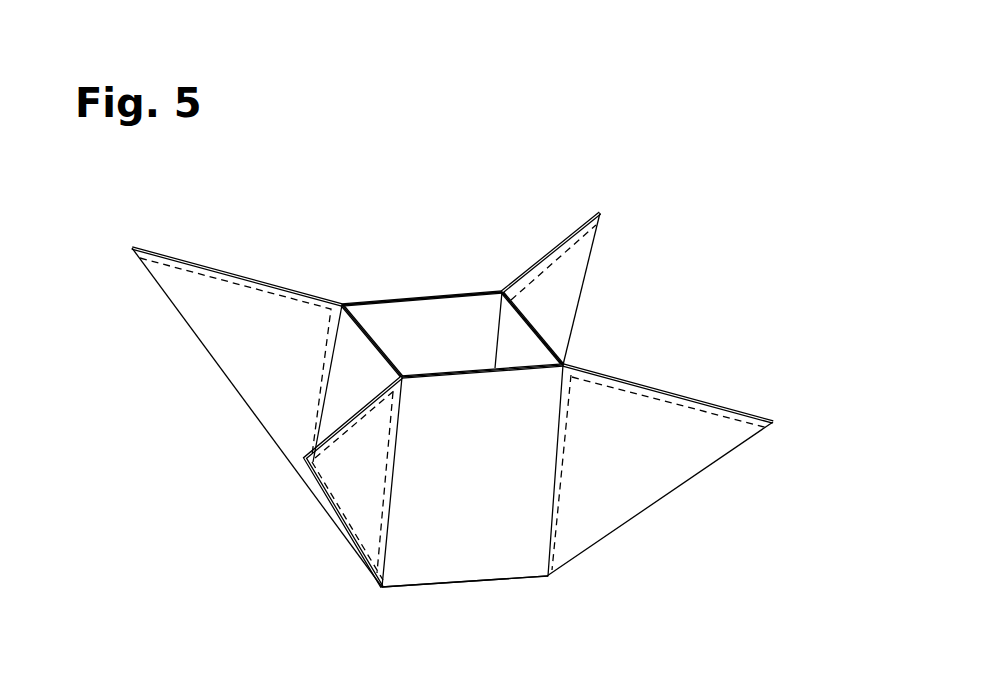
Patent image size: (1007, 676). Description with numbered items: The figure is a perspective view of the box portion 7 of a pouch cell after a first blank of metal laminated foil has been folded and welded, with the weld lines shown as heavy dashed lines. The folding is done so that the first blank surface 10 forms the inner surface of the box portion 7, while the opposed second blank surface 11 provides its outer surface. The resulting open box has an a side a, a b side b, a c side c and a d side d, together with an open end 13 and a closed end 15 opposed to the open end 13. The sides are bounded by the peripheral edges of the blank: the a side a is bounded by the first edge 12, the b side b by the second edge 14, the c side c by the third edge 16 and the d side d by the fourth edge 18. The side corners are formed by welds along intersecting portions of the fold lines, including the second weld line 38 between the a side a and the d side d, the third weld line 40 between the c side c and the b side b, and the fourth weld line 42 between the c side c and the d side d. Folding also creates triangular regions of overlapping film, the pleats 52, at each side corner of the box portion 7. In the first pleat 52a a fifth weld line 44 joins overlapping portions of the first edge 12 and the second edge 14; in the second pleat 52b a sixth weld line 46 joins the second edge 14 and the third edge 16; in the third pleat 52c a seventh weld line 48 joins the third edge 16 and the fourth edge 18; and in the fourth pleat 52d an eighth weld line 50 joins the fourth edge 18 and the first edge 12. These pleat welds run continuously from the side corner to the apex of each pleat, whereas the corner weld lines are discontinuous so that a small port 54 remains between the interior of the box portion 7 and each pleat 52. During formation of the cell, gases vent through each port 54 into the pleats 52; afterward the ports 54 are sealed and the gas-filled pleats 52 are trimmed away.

The box portion 7 is at (177, 218).
The first blank surface 10 is at (519, 362).
The second blank surface 11 is at (322, 525).
The first edge 12 is at (530, 340).
The open end 13 is at (495, 293).
The second edge 14 is at (462, 293).
The closed end 15 is at (515, 577).
The third edge 16 is at (373, 330).
The fourth edge 18 is at (445, 367).
The second weld line 38 is at (560, 532).
The third weld line 40 is at (330, 362).
The fourth weld line 42 is at (320, 500).
The fifth weld line 44 is at (546, 262).
The sixth weld line 46 is at (240, 277).
The seventh weld line 48 is at (329, 470).
The eighth weld line 50 is at (703, 412).
The pleats 52 is at (435, 402).
The first pleat 52a is at (629, 271).
The second pleat 52b is at (223, 418).
The third pleat 52c is at (284, 508).
The fourth pleat 52d is at (676, 483).
The port 54 is at (330, 397).
The a side a is at (528, 328).
The b side b is at (465, 322).
The c side c is at (333, 373).
The d side d is at (455, 563).